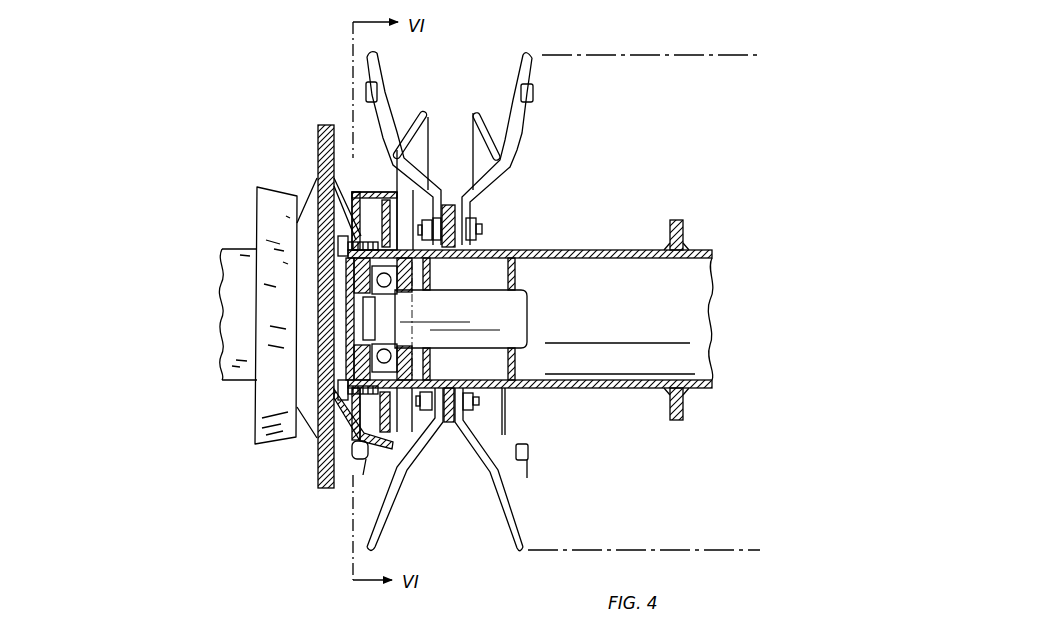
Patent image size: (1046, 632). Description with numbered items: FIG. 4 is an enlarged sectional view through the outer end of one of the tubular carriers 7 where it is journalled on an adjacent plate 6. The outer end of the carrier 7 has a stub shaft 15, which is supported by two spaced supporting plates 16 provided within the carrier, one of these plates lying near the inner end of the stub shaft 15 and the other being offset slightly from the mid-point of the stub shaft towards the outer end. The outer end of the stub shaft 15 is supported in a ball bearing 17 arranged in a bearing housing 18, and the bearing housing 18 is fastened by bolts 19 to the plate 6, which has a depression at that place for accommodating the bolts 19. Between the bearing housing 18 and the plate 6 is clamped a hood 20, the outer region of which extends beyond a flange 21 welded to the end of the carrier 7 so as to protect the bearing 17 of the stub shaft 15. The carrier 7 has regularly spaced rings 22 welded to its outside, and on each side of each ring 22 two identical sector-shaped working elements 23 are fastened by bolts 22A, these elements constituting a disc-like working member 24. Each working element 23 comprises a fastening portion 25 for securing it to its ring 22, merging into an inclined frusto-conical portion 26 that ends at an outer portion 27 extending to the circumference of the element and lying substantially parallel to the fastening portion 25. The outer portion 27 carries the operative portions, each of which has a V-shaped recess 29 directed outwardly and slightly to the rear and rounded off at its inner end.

The plate 6 is at (328, 124).
The carrier 7 is at (224, 246).
The stub shaft 15 is at (520, 313).
The supporting plates 16 is at (507, 263).
The ball bearing 17 is at (380, 305).
The bearing housing 18 is at (427, 361).
The bolts 19 is at (336, 252).
The hood 20 is at (267, 184).
The flange 21 is at (318, 470).
The rings 22 is at (677, 218).
The bolts 22A is at (476, 233).
The working elements 23 is at (395, 81).
The working member 24 is at (365, 54).
The fastening portion 25 is at (469, 208).
The frusto-conical portion 26 is at (466, 195).
The outer portion 27 is at (368, 102).
The V-shaped recess 29 is at (372, 80).